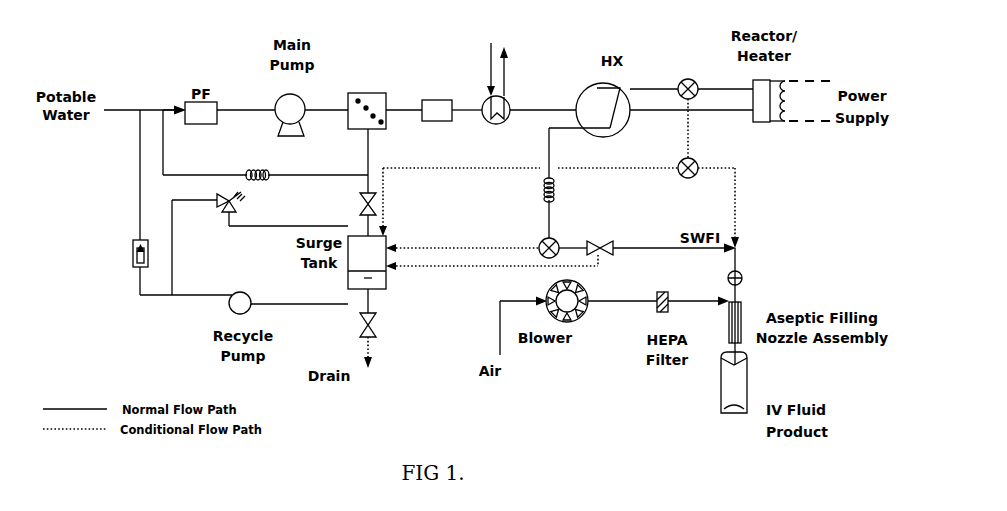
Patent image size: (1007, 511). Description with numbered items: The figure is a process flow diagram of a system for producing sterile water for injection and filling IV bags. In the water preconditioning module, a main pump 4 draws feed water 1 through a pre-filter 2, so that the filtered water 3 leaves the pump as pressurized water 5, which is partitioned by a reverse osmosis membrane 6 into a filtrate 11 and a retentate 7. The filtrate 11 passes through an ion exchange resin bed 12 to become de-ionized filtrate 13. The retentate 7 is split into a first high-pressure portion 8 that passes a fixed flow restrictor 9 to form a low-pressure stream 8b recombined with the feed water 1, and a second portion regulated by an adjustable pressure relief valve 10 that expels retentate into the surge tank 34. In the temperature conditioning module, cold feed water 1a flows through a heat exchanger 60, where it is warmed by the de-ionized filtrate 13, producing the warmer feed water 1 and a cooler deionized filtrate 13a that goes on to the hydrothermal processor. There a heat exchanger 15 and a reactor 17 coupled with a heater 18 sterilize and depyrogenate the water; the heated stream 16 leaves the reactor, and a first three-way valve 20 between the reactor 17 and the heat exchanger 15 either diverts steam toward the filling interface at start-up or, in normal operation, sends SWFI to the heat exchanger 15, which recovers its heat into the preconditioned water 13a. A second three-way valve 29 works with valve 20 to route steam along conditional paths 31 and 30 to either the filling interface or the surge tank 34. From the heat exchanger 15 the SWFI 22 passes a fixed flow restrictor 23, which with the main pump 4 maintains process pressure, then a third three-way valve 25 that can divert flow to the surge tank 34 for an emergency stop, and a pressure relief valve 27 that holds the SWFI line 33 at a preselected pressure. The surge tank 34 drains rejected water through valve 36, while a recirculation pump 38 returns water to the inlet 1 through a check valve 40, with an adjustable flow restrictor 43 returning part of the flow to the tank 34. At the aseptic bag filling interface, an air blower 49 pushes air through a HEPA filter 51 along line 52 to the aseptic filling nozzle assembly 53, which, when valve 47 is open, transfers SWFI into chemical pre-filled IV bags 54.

The feed water 1 is at (130, 112).
The cold feed water 1a is at (480, 64).
The pre-filter 2 is at (185, 103).
The filtered water 3 is at (240, 110).
The main pump 4 is at (278, 97).
The pressurized water 5 is at (315, 112).
The reverse osmosis membrane 6 is at (365, 93).
The retentate 7 is at (359, 161).
The first high-pressure portion 8 is at (265, 169).
The low-pressure water stream 8b is at (177, 142).
The fixed flow restrictor 9 is at (250, 170).
The adjustable pressure relief valve 10 is at (360, 203).
The filtrate 11 is at (404, 127).
The ion exchange resin bed 12 is at (435, 100).
The de-ionized filtrate 13 is at (467, 101).
The cooler deionized filtrate 13a is at (543, 100).
The heat exchanger 15 is at (581, 91).
The line from heat exchanger to reactor 16 is at (691, 126).
The reactor 17 is at (753, 82).
The heater 18 is at (788, 82).
The first three-way valve 20 is at (683, 81).
The SWFI 22 is at (579, 153).
The fixed flow restrictor 23 is at (540, 189).
The third three-way valve 25 is at (539, 241).
The pressure relief valve 27 is at (610, 242).
The second three-way valve 29 is at (699, 160).
The conditional flow line 30 is at (741, 203).
The conditional flow line 31 is at (629, 170).
The SWFI line 33 is at (666, 246).
The surge tank 34 is at (346, 279).
The valve 36 is at (346, 328).
The recirculation pump 38 is at (229, 309).
The check valve 40 is at (132, 249).
The adjustable flow restrictor 43 is at (223, 208).
The valve 47 is at (744, 273).
The air blower 49 is at (592, 321).
The HEPA filter 51 is at (649, 312).
The air line to nozzle assembly 52 is at (698, 298).
The aseptic filling nozzle assembly 53 is at (727, 325).
The IV bags 54 is at (748, 389).
The heat exchanger 60 is at (483, 121).